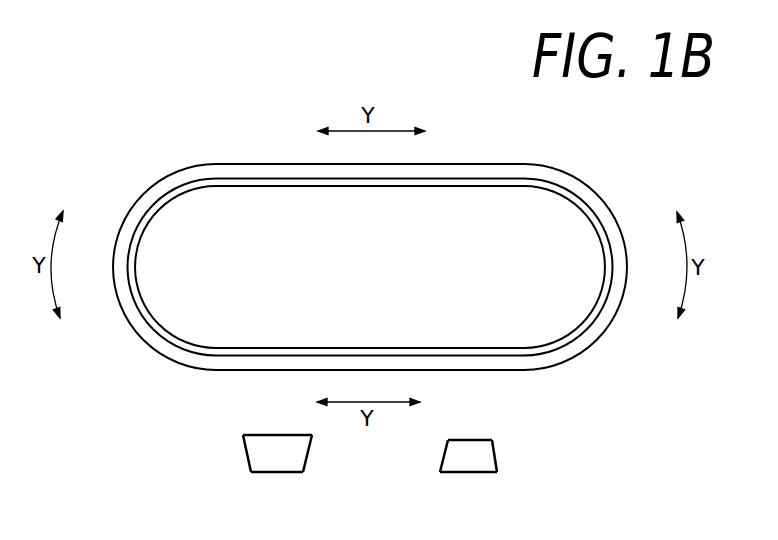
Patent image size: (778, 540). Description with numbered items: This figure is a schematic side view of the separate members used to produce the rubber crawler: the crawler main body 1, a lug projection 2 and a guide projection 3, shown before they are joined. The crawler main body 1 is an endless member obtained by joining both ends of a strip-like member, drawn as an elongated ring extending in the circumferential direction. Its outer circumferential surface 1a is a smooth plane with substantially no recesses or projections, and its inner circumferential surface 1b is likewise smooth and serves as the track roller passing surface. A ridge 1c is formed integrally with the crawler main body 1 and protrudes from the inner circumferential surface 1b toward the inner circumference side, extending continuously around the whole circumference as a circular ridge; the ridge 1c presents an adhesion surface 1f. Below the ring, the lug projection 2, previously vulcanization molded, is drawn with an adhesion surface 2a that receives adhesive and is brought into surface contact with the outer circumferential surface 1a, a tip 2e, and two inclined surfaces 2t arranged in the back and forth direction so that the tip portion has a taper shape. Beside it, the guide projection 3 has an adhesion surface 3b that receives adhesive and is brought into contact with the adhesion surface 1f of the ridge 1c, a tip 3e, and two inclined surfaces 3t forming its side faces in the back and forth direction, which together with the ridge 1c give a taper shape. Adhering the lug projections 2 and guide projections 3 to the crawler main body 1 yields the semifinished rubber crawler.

The crawler main body 1 is at (370, 242).
The outer circumferential surface 1a is at (469, 163).
The inner circumferential surface 1b is at (467, 183).
The ridge 1c is at (394, 182).
The adhesion surface of the ridge 1f is at (333, 188).
The lug projection 2 is at (270, 457).
The adhesion surface of the lug projection 2a is at (277, 435).
The inclined surface of the lug projection 2t is at (244, 452).
The tip of the lug projection 2e is at (277, 473).
The guide projection 3 is at (470, 455).
The tip of the guide projection 3e is at (468, 440).
The inclined surface of the guide projection 3t is at (443, 455).
The adhesion surface of the guide projection 3b is at (469, 473).